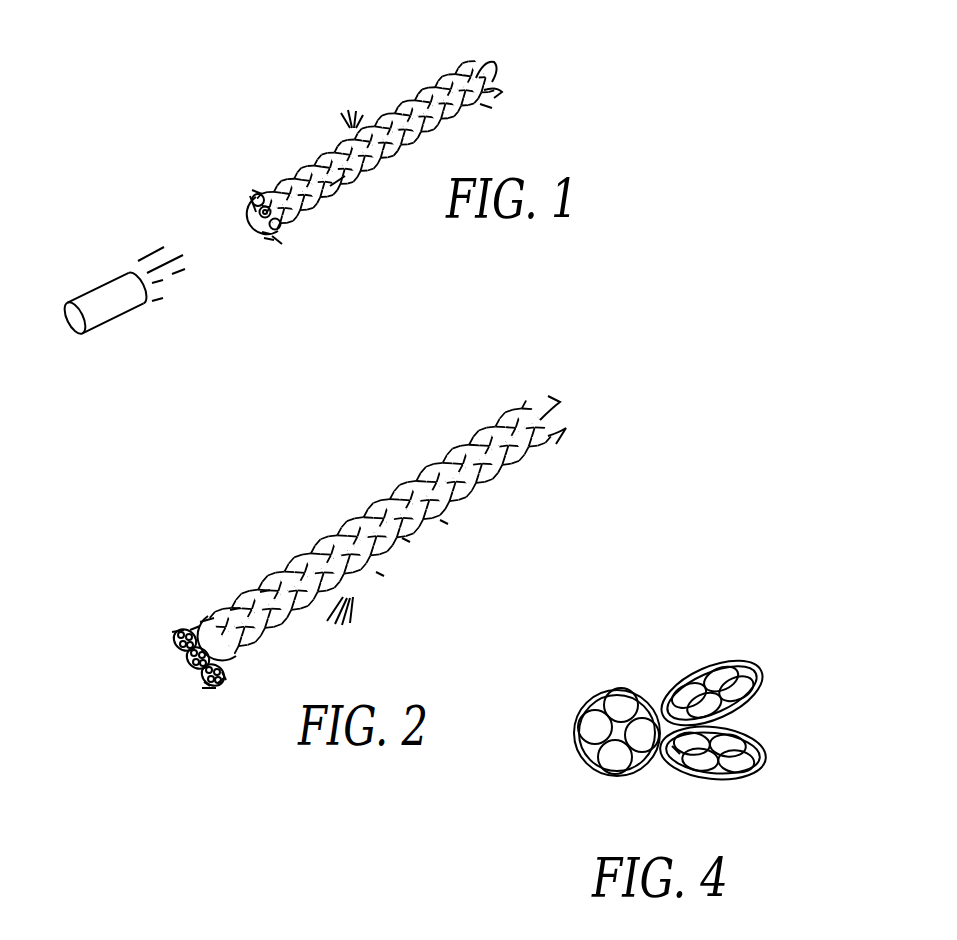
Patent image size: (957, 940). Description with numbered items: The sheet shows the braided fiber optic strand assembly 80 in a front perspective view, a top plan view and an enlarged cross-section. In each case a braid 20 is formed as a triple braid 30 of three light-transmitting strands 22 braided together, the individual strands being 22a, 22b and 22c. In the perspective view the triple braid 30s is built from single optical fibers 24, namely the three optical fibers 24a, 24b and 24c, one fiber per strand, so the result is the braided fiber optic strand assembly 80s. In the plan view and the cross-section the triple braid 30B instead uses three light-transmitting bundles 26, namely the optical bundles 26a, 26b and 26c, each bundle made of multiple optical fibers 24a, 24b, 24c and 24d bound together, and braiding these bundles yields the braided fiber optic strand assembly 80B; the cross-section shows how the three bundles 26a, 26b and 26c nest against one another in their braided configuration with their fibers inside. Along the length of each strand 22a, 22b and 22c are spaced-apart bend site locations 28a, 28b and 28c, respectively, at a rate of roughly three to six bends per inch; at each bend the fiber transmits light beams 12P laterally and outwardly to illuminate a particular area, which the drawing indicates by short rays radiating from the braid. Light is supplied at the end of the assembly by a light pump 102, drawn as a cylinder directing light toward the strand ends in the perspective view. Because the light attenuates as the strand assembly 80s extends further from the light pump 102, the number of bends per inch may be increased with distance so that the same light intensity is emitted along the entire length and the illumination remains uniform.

In FIG. 1, the braid 20 is at (330, 76).
In FIG. 2, the braid 20 is at (279, 516).
In FIG. 1, the triple braid 30 is at (301, 88).
In FIG. 2, the triple braid 30 is at (350, 476).
In FIG. 1, the triple braid 30s is at (396, 86).
In FIG. 2, the triple braid 30B is at (398, 456).
In FIG. 4, the triple braid 30B is at (648, 678).
In FIG. 1, the light beams 12P is at (350, 130).
In FIG. 2, the light beams 12P is at (358, 603).
In FIG. 1, the light-transmitting strand 22 is at (265, 185).
In FIG. 2, the light-transmitting strand 22 is at (207, 613).
In FIG. 1, the first fiber optic strand 22a is at (252, 200).
In FIG. 2, the first fiber optic strand 22a is at (195, 626).
In FIG. 4, the first fiber optic strand 22a is at (750, 781).
In FIG. 1, the second fiber optic strand 22b is at (258, 213).
In FIG. 2, the second fiber optic strand 22b is at (235, 606).
In FIG. 4, the second fiber optic strand 22b is at (610, 776).
In FIG. 1, the third fiber optic strand 22c is at (281, 223).
In FIG. 2, the third fiber optic strand 22c is at (264, 589).
In FIG. 4, the third fiber optic strand 22c is at (758, 667).
In FIG. 1, the optical fiber 24 is at (279, 250).
In FIG. 2, the optical fiber 24 is at (177, 626).
In FIG. 4, the optical fiber 24 is at (710, 672).
In FIG. 1, the optical fiber 24a is at (256, 184).
In FIG. 2, the optical fiber 24a is at (212, 692).
In FIG. 4, the optical fiber 24a is at (612, 755).
In FIG. 1, the optical fiber 24b is at (265, 238).
In FIG. 2, the optical fiber 24b is at (222, 680).
In FIG. 4, the optical fiber 24b is at (592, 725).
In FIG. 1, the optical fiber 24c is at (268, 246).
In FIG. 2, the optical fiber 24c is at (222, 676).
In FIG. 4, the optical fiber 24c is at (620, 708).
In FIG. 2, the optical fiber 24d is at (203, 679).
In FIG. 4, the optical fiber 24d is at (676, 750).
In FIG. 1, the light-transmitting bundle 26 is at (338, 192).
In FIG. 2, the light-transmitting bundle 26 is at (500, 411).
In FIG. 4, the light-transmitting bundle 26 is at (743, 738).
In FIG. 2, the first optical bundle 26a is at (173, 639).
In FIG. 4, the first optical bundle 26a is at (692, 762).
In FIG. 2, the second optical bundle 26b is at (190, 670).
In FIG. 4, the second optical bundle 26b is at (591, 750).
In FIG. 2, the third optical bundle 26c is at (206, 692).
In FIG. 4, the third optical bundle 26c is at (750, 710).
In FIG. 1, the bend site locations 28a is at (428, 127).
In FIG. 2, the bend site locations 28a is at (382, 574).
In FIG. 1, the bend site locations 28b is at (462, 110).
In FIG. 2, the bend site locations 28b is at (408, 540).
In FIG. 1, the bend site locations 28c is at (488, 100).
In FIG. 2, the bend site locations 28c is at (447, 522).
In FIG. 1, the braided fiber optic strand assembly 80 is at (168, 167).
In FIG. 1, the braided fiber optic strand assembly 80s is at (250, 205).
In FIG. 2, the braided fiber optic strand assembly 80B is at (188, 657).
In FIG. 4, the braided fiber optic strand assembly 80B is at (633, 771).
In FIG. 1, the light pump 102 is at (88, 284).